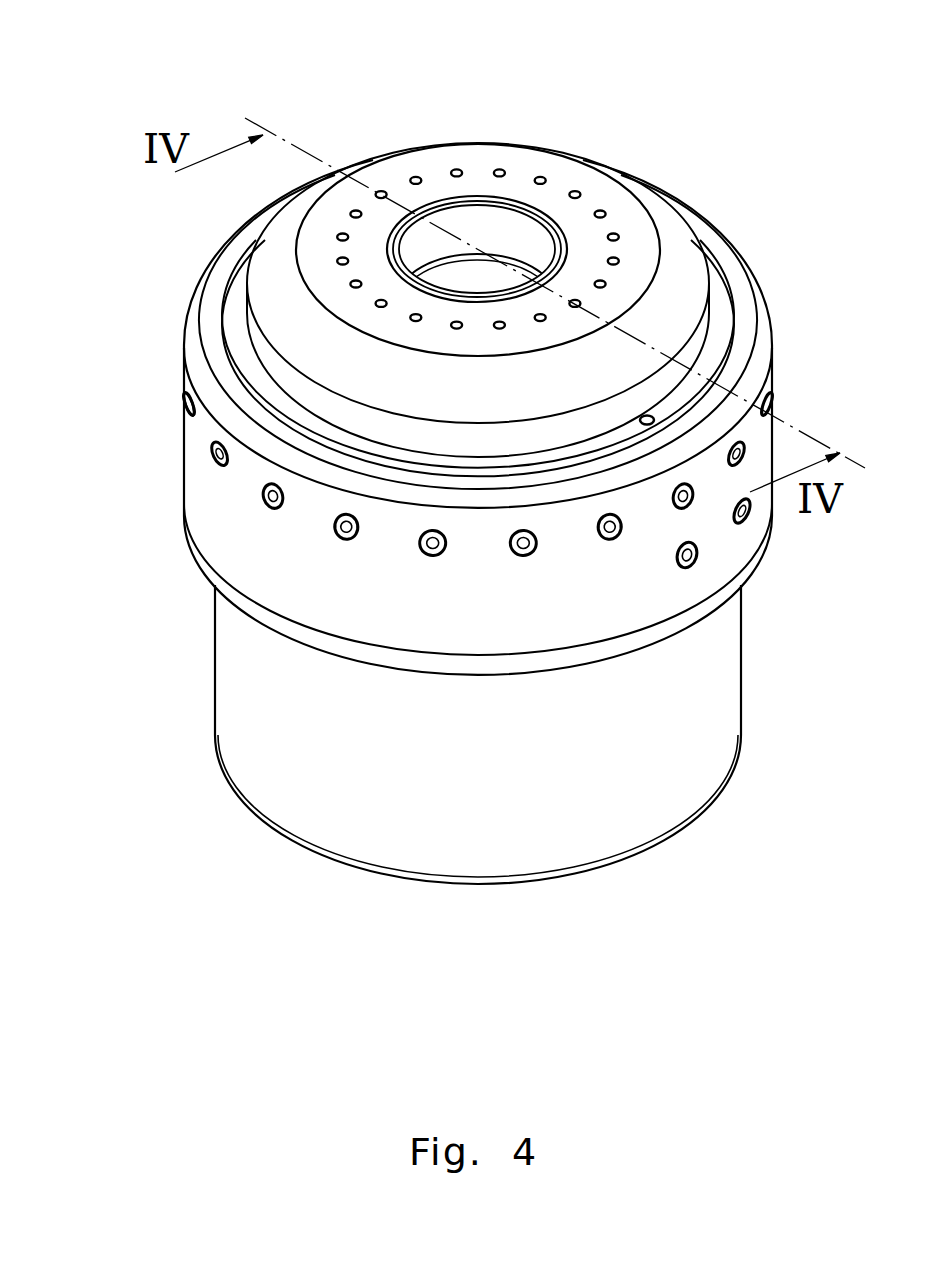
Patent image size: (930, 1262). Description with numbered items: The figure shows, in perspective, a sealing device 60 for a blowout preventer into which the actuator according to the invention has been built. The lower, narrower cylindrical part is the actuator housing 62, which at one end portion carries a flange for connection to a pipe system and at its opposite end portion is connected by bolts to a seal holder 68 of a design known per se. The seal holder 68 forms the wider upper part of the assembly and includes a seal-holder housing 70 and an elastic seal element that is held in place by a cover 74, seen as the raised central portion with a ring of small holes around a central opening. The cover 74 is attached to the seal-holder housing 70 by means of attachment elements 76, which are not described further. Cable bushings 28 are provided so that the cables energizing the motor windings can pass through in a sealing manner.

The sealing device 60 is at (485, 445).
The seal holder 68 is at (473, 409).
The cover 74 is at (267, 290).
The seal-holder housing 70 is at (193, 347).
The attachment elements 76 is at (205, 455).
The cable bushing 28 is at (749, 520).
The actuator housing 62 is at (737, 707).